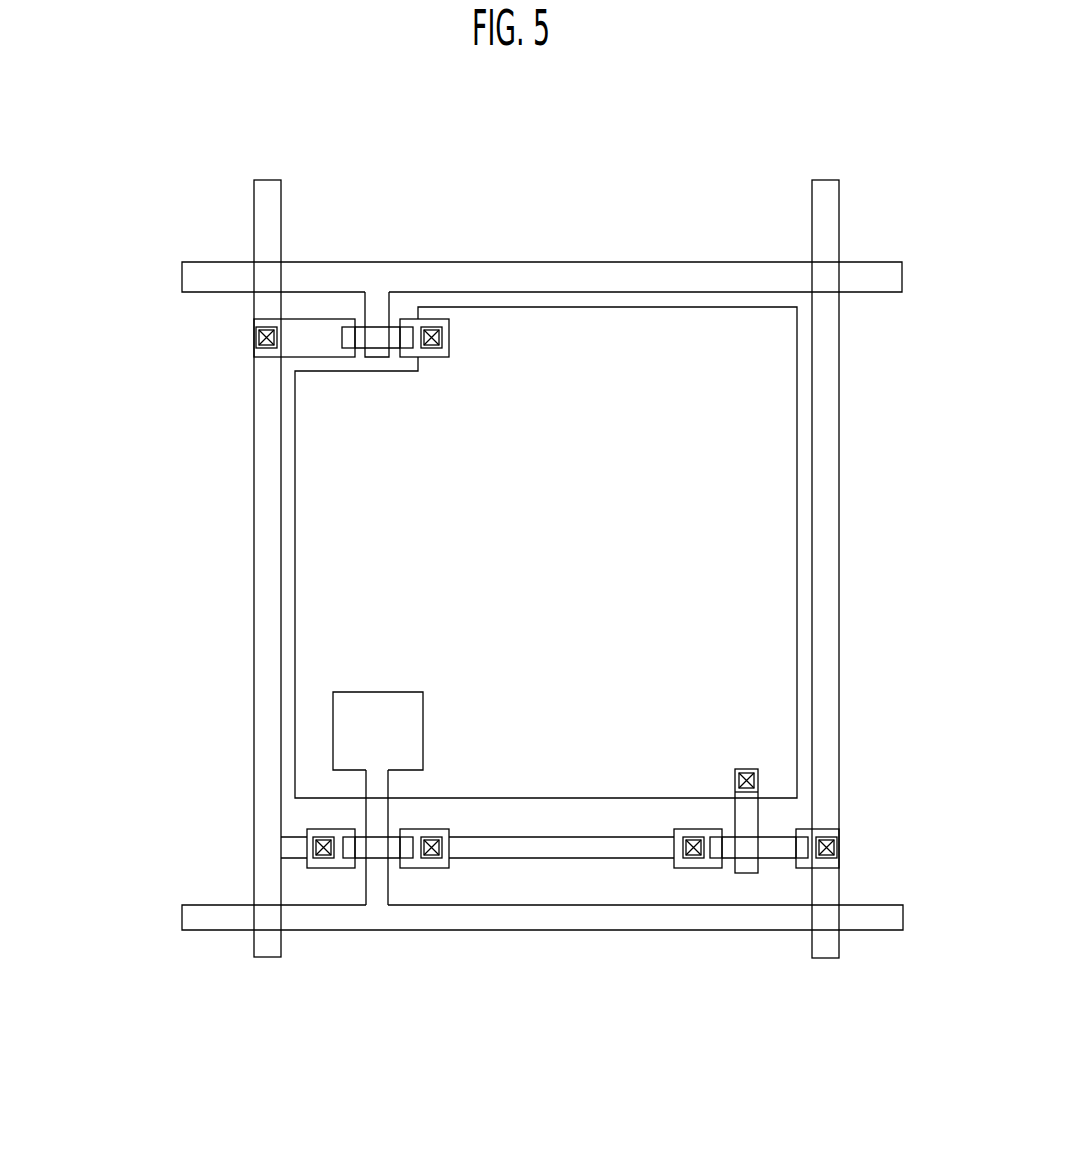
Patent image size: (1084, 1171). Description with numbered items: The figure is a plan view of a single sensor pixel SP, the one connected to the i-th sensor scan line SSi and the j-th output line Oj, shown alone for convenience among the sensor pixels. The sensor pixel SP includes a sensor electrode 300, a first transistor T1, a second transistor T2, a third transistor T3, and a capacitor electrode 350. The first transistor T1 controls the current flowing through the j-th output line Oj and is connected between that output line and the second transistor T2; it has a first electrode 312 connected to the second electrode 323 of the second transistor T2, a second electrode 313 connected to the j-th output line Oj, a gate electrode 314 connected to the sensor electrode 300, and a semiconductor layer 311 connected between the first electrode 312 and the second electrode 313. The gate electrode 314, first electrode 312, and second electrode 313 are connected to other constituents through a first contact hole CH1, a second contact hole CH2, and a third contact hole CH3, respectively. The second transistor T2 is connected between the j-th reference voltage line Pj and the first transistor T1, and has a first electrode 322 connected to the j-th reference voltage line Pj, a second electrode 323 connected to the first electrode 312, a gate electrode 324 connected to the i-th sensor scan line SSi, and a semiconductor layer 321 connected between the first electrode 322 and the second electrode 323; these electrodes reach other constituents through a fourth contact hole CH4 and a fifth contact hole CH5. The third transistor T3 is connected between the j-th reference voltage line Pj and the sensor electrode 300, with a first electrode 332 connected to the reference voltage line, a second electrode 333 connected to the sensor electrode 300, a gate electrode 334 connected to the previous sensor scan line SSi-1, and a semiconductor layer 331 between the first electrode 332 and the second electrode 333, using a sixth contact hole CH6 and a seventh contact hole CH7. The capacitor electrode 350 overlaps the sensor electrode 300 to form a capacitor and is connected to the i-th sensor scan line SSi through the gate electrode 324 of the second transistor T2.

The sensor pixel SP is at (790, 80).
The j-th reference voltage line Pj is at (264, 180).
The j-th output line Oj is at (826, 180).
The (i-1)-th sensor scan line SSi-1 is at (182, 276).
The i-th sensor scan line SSi is at (182, 918).
The sensor electrode 300 is at (797, 532).
The capacitor electrode 350 is at (333, 712).
The first transistor T1 is at (774, 894).
The second transistor T2 is at (401, 907).
The third transistor T3 is at (347, 263).
The semiconductor layer 311 is at (729, 860).
The first electrode 312 is at (700, 868).
The second electrode 313 is at (805, 868).
The gate electrode 314 is at (746, 873).
The semiconductor layer 321 is at (359, 860).
The first electrode 322 is at (330, 868).
The second electrode 323 is at (430, 868).
The gate electrode 324 is at (388, 878).
The semiconductor layer 331 is at (360, 327).
The first electrode 332 is at (302, 319).
The second electrode 333 is at (408, 319).
The gate electrode 334 is at (389, 308).
The first contact hole CH1 is at (758, 781).
The second contact hole CH2 is at (691, 840).
The third contact hole CH3 is at (837, 845).
The fourth contact hole CH4 is at (322, 858).
The fifth contact hole CH5 is at (482, 910).
The sixth contact hole CH6 is at (256, 338).
The seventh contact hole CH7 is at (473, 280).